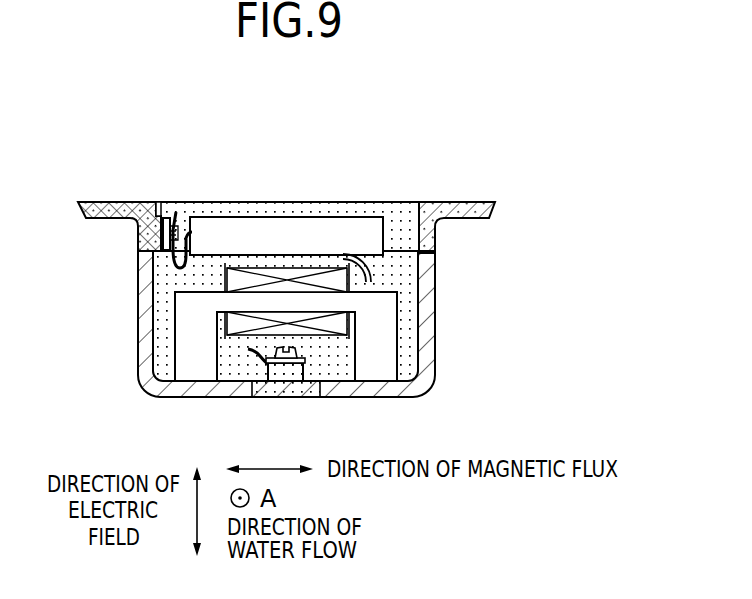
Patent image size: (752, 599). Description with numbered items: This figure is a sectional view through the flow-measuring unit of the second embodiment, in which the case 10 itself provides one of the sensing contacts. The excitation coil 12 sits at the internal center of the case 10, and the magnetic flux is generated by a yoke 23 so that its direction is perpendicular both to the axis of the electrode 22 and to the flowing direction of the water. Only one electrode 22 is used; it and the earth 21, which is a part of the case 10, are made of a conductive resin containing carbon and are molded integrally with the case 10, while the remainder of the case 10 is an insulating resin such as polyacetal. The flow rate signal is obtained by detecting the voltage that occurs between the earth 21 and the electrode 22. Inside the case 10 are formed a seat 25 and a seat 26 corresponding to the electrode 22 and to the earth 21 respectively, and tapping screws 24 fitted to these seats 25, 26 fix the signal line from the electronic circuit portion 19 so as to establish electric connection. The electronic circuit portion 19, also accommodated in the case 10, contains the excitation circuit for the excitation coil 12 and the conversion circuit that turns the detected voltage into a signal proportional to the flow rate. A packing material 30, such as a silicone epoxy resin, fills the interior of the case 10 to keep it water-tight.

The case 10 is at (437, 300).
The excitation coil 12 is at (235, 282).
The electronic circuit portion 19 is at (347, 228).
The earth 21 is at (104, 206).
The electrode 22 is at (292, 390).
The yoke 23 is at (178, 340).
The tapping screws 24 is at (175, 212).
The seat 25 is at (268, 369).
The seat 26 is at (158, 202).
The packing material 30 is at (162, 308).